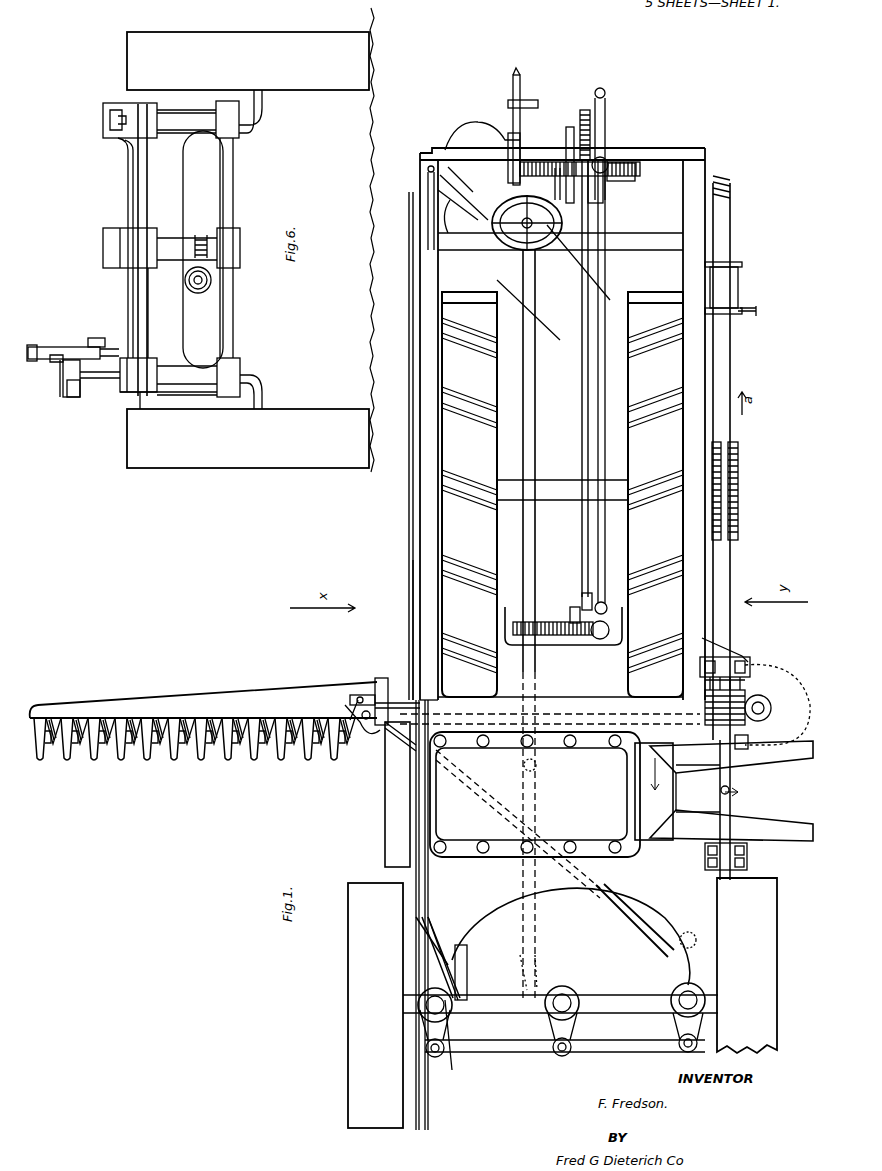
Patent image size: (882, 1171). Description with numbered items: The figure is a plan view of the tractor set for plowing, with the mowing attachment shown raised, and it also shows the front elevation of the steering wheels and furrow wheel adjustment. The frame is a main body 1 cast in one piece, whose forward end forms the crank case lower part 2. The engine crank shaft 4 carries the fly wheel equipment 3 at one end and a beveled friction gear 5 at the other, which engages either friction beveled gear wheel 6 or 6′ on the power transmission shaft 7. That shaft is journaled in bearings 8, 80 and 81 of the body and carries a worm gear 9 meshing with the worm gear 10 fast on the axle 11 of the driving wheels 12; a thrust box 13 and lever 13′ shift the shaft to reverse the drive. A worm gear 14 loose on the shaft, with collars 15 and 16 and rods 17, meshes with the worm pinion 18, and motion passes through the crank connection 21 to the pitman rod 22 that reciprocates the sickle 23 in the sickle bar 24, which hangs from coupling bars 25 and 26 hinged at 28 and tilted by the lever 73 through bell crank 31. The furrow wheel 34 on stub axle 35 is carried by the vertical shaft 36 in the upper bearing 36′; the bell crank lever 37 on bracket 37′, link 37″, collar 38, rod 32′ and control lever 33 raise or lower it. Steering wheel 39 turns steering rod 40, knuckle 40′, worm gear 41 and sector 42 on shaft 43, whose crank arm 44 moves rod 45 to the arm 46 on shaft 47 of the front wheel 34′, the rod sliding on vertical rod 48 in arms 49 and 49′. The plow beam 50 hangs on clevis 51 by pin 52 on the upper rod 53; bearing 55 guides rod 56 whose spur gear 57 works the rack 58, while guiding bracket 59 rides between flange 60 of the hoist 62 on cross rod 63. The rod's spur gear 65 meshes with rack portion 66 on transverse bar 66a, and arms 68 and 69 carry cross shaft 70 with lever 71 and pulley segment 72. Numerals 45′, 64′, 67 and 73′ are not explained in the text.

In FIG. 6, the main body 1 is at (163, 313).
In FIG. 1, the main body 1 is at (430, 150).
In FIG. 1, the crank case lower part 2 is at (505, 848).
In FIG. 1, the fly wheel equipment 3 is at (390, 808).
In FIG. 1, the engine crank shaft 4 is at (627, 787).
In FIG. 1, the beveled friction gear 5 is at (648, 840).
In FIG. 1, the friction beveled gear wheel 6 is at (670, 840).
In FIG. 1, the friction beveled gear wheel 6′ is at (684, 768).
In FIG. 1, the power transmission shaft 7 is at (730, 222).
In FIG. 1, the bearing 8 is at (735, 652).
In FIG. 1, the worm gear 9 is at (738, 468).
In FIG. 1, the worm gear 10 is at (740, 520).
In FIG. 1, the axle 11 is at (553, 480).
In FIG. 1, the tractor driving wheels 12 is at (562, 494).
In FIG. 1, the thrust box 13 is at (723, 288).
In FIG. 1, the lever 13′ is at (745, 315).
In FIG. 1, the worm gear 14 is at (715, 810).
In FIG. 1, the collar 15 is at (705, 705).
In FIG. 1, the collar 16 is at (700, 665).
In FIG. 1, the rod 17 is at (755, 690).
In FIG. 1, the worm pinion 18 is at (785, 695).
In FIG. 1, the crank or wrist pin connection 21 is at (748, 745).
In FIG. 1, the pitman rod 22 is at (412, 735).
In FIG. 1, the sickle 23 is at (275, 715).
In FIG. 1, the sickle bar 24 is at (300, 683).
In FIG. 1, the coupling bar 25 is at (385, 680).
In FIG. 1, the coupling bar 26 is at (618, 910).
In FIG. 1, the hinge point 28 is at (681, 946).
In FIG. 1, the bell crank connection 31 is at (434, 935).
In FIG. 1, the rod 32′ is at (428, 890).
In FIG. 1, the control lever 33 is at (428, 185).
In FIG. 6, the furrow wheel 34 is at (292, 390).
In FIG. 1, the furrow wheel 34 is at (388, 1128).
In FIG. 6, the left hand front wheel 34′ is at (300, 90).
In FIG. 1, the left hand front wheel 34′ is at (747, 965).
In FIG. 6, the stub axle 35 is at (258, 385).
In FIG. 6, the vertical shaft 36 is at (120, 390).
In FIG. 1, the vertical shaft 36 is at (428, 995).
In FIG. 6, the upper bearing 36′ is at (135, 398).
In FIG. 6, the bell crank lever 37 is at (70, 347).
In FIG. 1, the bell crank lever 37 is at (440, 950).
In FIG. 6, the bracket 37′ is at (105, 338).
In FIG. 1, the bracket 37′ is at (467, 975).
In FIG. 6, the collar 38 is at (70, 397).
In FIG. 1, the collar 38 is at (435, 996).
In FIG. 1, the steering wheel 39 is at (520, 248).
In FIG. 1, the steering rod 40 is at (523, 345).
In FIG. 1, the knuckle connection 40′ is at (524, 765).
In FIG. 6, the worm gear 41 is at (198, 293).
In FIG. 1, the worm gear 41 is at (525, 993).
In FIG. 6, the sector 42 is at (201, 235).
In FIG. 1, the sector 42 is at (560, 990).
In FIG. 6, the short vertical shaft 43 is at (214, 240).
In FIG. 1, the short vertical shaft 43 is at (568, 994).
In FIG. 6, the crank arm 44 is at (157, 235).
In FIG. 1, the crank arm 44 is at (575, 1055).
In FIG. 1, the rod 45 is at (480, 1052).
In FIG. 6, the shaft 45′ is at (147, 172).
In FIG. 6, the arm 46 is at (142, 104).
In FIG. 1, the arm 46 is at (680, 1045).
In FIG. 6, the vertical shaft 47 is at (212, 138).
In FIG. 1, the vertical shaft 47 is at (675, 990).
In FIG. 6, the vertical rod 48 is at (97, 380).
In FIG. 1, the vertical rod 48 is at (436, 1057).
In FIG. 6, the upper arm 49 is at (88, 374).
In FIG. 6, the lower arm 49′ is at (168, 397).
In FIG. 1, the plow beam 50 is at (582, 425).
In FIG. 1, the clevis 51 is at (582, 605).
In FIG. 1, the pin 52 is at (570, 602).
In FIG. 1, the upper rod 53 is at (512, 618).
In FIG. 1, the bearing 55 is at (607, 606).
In FIG. 1, the rod 56 is at (605, 520).
In FIG. 1, the spur gear 57 is at (600, 640).
In FIG. 1, the rack 58 is at (545, 622).
In FIG. 1, the upright guiding bracket 59 is at (570, 268).
In FIG. 1, the guiding flange 60 is at (560, 184).
In FIG. 1, the slidable hoist 62 is at (622, 181).
In FIG. 1, the cross rod 63 is at (462, 200).
In FIG. 1, the slide 64′ is at (603, 195).
In FIG. 1, the spur gear 65 is at (606, 158).
In FIG. 1, the rack portion 66 is at (630, 162).
In FIG. 1, the transverse bar 66a is at (475, 131).
In FIG. 1, the hand lever 67 is at (600, 98).
In FIG. 1, the rearwardly projecting arm 68 is at (520, 140).
In FIG. 1, the rearwardly projecting arm 69 is at (570, 136).
In FIG. 1, the cross shaft 70 is at (538, 108).
In FIG. 1, the lever 71 is at (513, 100).
In FIG. 1, the pulley segment 72 is at (579, 134).
In FIG. 1, the lever 73 is at (403, 203).
In FIG. 1, the side rod 73′ is at (405, 578).
In FIG. 1, the bearing 80 is at (727, 768).
In FIG. 1, the bearing 81 is at (705, 856).